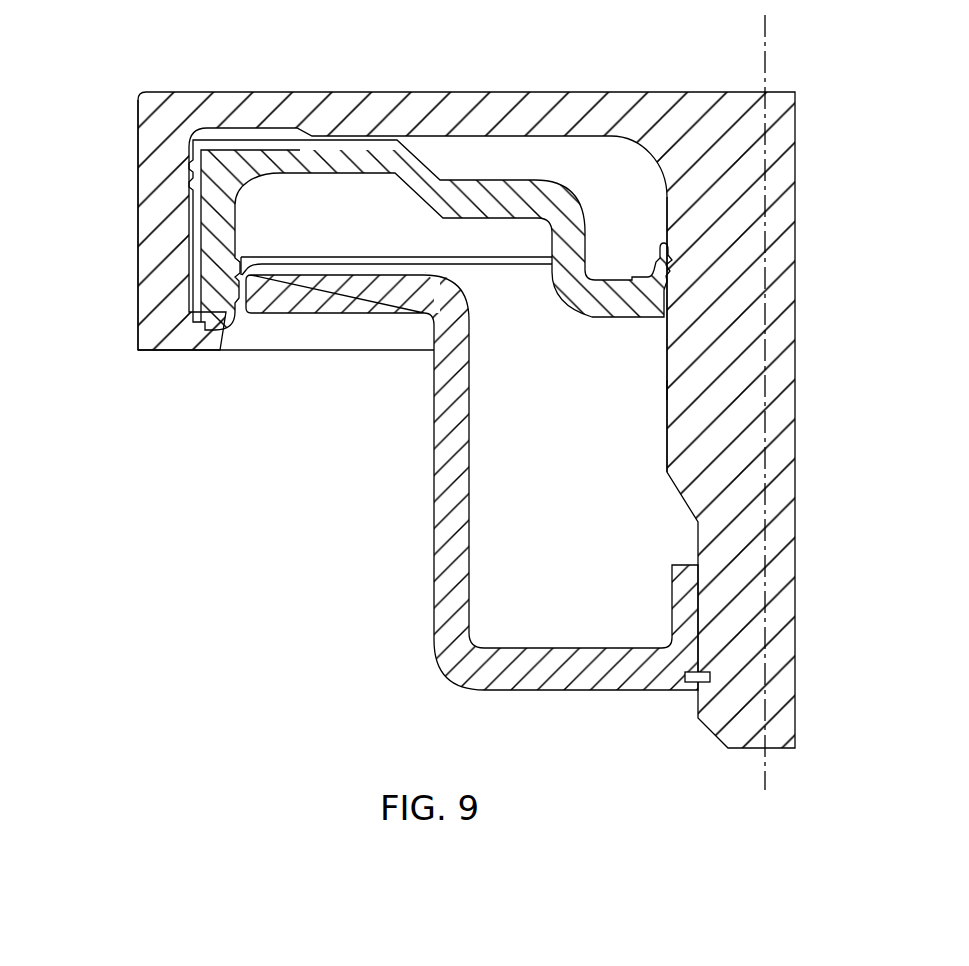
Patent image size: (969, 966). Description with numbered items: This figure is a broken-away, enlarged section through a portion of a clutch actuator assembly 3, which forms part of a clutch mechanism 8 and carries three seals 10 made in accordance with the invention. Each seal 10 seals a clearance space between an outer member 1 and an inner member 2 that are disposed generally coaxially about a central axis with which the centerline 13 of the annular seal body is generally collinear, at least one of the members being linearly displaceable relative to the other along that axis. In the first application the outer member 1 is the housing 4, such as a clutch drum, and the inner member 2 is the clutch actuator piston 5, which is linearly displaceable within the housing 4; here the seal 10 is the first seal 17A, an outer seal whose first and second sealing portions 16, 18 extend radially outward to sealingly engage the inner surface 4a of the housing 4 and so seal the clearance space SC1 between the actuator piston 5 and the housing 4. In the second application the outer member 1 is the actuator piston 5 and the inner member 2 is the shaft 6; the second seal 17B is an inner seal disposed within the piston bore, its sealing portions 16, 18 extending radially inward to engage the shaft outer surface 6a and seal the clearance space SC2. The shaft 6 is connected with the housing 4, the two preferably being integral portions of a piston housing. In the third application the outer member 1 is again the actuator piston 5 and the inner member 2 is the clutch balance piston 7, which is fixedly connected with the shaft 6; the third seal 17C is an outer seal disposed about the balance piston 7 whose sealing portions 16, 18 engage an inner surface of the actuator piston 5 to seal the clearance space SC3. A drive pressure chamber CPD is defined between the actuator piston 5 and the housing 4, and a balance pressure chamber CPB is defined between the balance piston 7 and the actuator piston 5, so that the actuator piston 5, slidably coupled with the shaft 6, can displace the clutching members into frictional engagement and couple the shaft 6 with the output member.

The outer member 1 is at (82, 212).
The inner member 2 is at (812, 349).
The clutch actuator assembly 3 is at (290, 425).
The housing 4 is at (137, 107).
The inner surface of the housing 4a is at (220, 227).
The clutch actuator piston 5 is at (537, 183).
The shaft 6 is at (780, 215).
The shaft outer surface 6a is at (667, 390).
The clutch balance piston 7 is at (433, 520).
The clutch mechanism 8 is at (262, 527).
The seal 10 is at (228, 130).
The centerline 13 is at (768, 28).
The first sealing portion 16 is at (187, 173).
The first seal 17A is at (172, 147).
The second seal 17B is at (646, 257).
The third seal 17C is at (258, 292).
The second sealing portion 18 is at (187, 190).
The clearance space SC1 is at (213, 262).
The clearance space SC2 is at (230, 312).
The clearance space SC3 is at (667, 295).
The balance pressure chamber CPB is at (330, 185).
The drive pressure chamber CPD is at (453, 152).